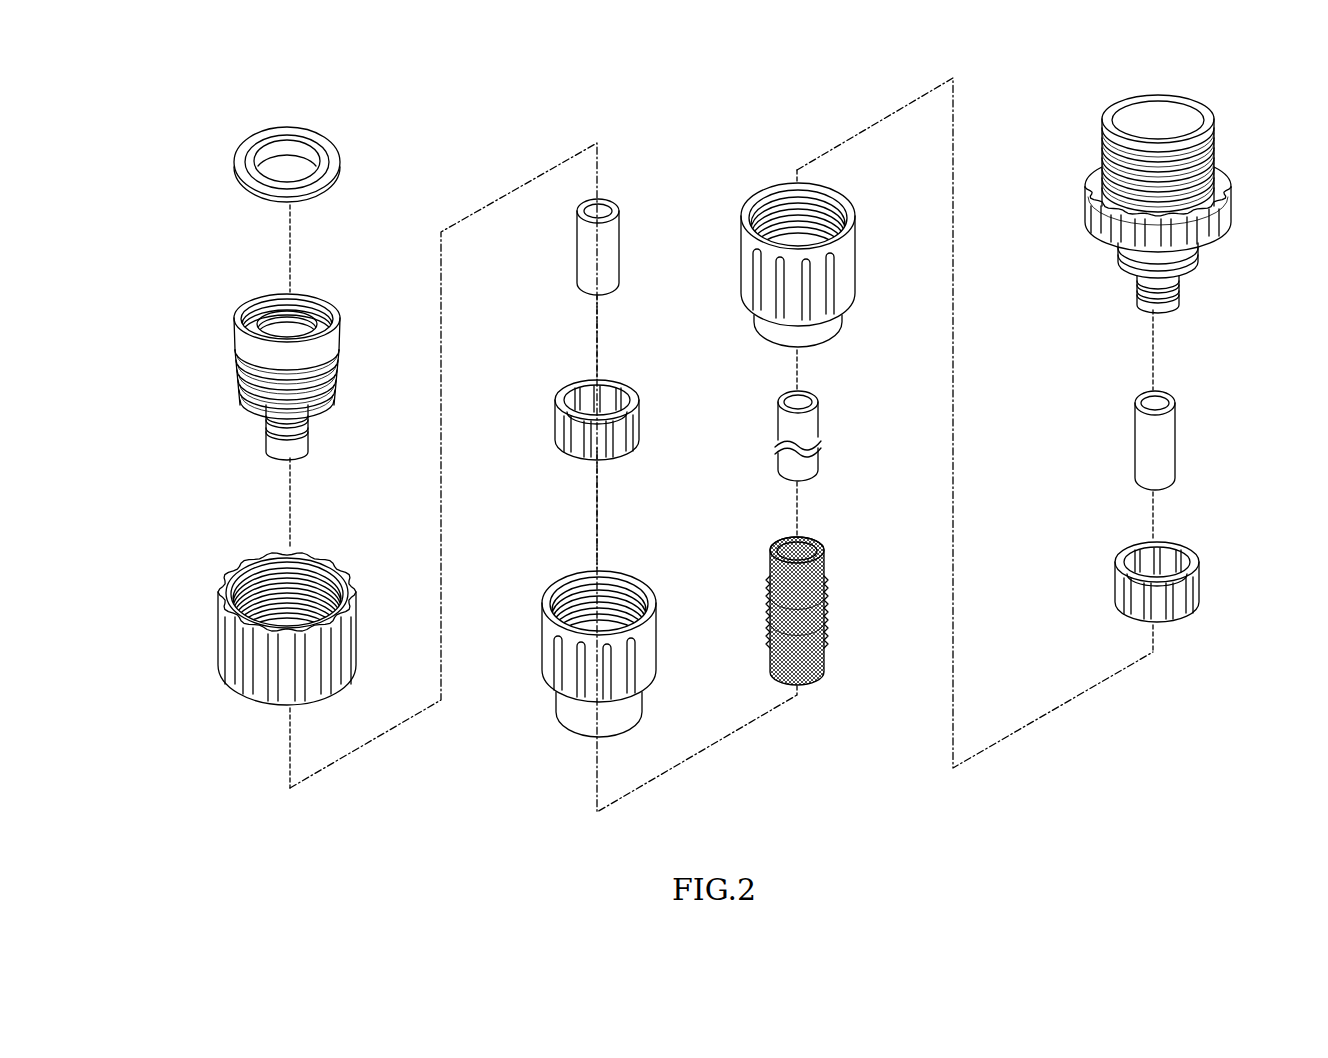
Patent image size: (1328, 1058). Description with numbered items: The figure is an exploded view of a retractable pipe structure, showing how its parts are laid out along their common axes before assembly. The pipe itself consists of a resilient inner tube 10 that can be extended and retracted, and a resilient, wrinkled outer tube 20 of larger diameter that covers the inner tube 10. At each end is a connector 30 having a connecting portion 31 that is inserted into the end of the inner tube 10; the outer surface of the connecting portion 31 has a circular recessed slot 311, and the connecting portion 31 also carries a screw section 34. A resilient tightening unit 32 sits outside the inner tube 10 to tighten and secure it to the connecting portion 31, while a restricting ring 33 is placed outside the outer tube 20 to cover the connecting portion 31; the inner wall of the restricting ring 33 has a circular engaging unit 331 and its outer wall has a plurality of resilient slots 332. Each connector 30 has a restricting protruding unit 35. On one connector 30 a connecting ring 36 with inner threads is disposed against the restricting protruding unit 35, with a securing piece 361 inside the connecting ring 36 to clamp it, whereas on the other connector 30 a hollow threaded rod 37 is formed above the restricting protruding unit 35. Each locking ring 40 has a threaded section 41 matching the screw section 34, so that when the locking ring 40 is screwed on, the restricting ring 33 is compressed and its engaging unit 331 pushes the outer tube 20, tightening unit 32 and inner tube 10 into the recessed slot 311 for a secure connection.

The inner tube 10 is at (830, 422).
The outer tube 20 is at (846, 598).
The connector 30 is at (687, 289).
The connecting portion 31 is at (307, 444).
The circular recessed slot 311 is at (307, 426).
The resilient tightening unit 32 is at (620, 244).
The restricting ring 33 is at (555, 411).
The circular engaging unit 331 is at (582, 398).
The resilient slots 332 is at (560, 440).
The screw section 34 is at (243, 380).
The restricting protruding unit 35 is at (338, 337).
The connecting ring 36 is at (220, 654).
The securing piece 361 is at (335, 158).
The hollow threaded rod 37 is at (1105, 160).
The locking ring 40 is at (534, 689).
The threaded section 41 is at (564, 588).